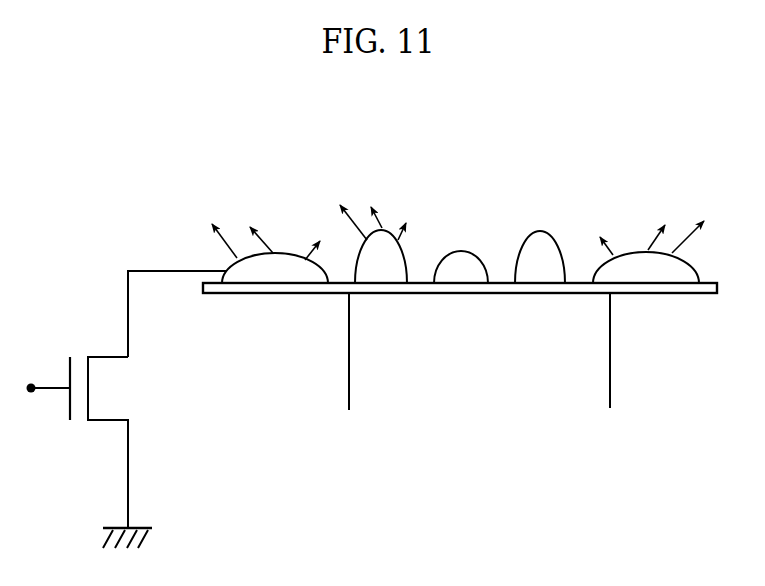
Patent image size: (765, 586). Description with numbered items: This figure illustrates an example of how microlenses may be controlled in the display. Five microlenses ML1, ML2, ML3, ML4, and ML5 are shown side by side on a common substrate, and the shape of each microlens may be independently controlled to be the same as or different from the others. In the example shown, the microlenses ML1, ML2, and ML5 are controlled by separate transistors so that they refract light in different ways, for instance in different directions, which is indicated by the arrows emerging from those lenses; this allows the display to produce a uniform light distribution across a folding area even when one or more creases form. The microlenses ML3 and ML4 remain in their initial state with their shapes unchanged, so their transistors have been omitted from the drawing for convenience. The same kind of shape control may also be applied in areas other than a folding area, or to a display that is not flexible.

The microlens ML1 is at (265, 283).
The microlens ML2 is at (384, 283).
The microlens ML3 is at (466, 283).
The microlens ML4 is at (544, 283).
The microlens ML5 is at (672, 283).